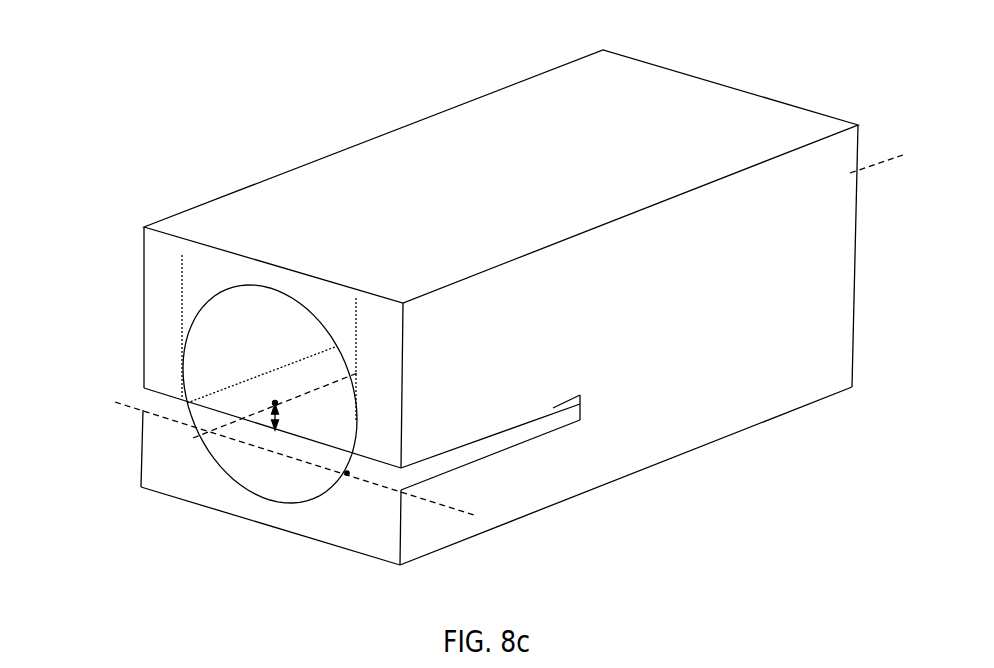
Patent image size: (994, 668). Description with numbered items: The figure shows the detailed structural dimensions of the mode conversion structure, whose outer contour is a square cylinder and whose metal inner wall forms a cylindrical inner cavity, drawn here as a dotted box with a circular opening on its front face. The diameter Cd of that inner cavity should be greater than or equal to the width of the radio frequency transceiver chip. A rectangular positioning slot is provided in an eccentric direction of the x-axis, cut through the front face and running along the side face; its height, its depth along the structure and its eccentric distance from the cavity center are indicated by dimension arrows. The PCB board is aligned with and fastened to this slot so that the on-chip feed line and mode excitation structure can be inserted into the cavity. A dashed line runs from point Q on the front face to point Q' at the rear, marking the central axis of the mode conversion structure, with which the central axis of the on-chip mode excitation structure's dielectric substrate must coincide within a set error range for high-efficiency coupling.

The diameter of the inner cavity Cd is at (355, 308).
The central axis endpoint Q is at (273, 411).
The central axis endpoint Q' is at (893, 158).